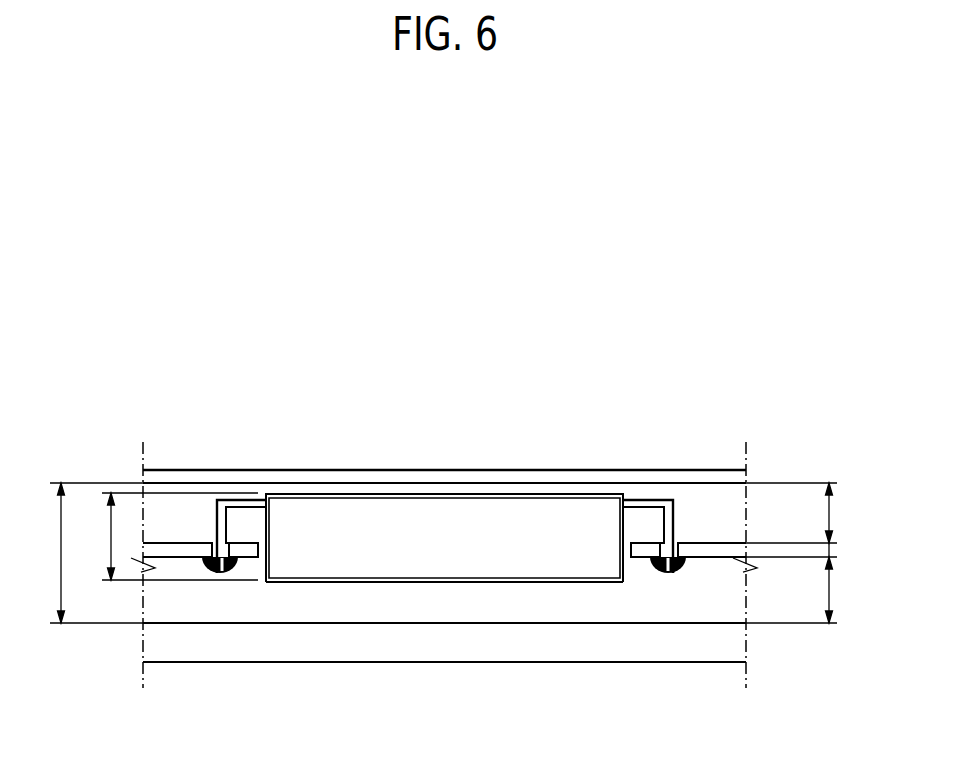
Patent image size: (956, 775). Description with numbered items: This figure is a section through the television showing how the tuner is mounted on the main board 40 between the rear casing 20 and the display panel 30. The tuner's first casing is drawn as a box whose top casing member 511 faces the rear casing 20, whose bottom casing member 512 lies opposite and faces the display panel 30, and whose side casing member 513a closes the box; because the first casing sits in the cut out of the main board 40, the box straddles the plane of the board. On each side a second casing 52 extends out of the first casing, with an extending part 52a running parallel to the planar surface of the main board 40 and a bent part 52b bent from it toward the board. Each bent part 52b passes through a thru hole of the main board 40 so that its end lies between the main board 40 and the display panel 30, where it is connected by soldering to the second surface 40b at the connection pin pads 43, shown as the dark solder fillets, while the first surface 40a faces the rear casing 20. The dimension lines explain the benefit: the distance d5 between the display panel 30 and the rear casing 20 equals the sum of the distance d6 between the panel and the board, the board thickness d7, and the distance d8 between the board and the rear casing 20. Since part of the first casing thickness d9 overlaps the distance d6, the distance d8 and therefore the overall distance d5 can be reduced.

The rear casing 20 is at (282, 473).
The display panel 30 is at (300, 653).
The main board 40 is at (720, 555).
The first surface 40a is at (191, 541).
The second surface 40b is at (194, 559).
The connection pin pads 43 is at (682, 548).
The second casing 52 is at (618, 373).
The extending part 52a is at (648, 501).
The bent part 52b is at (670, 525).
The top casing member 511 is at (360, 494).
The bottom casing member 512 is at (437, 583).
The side casing member 513a is at (447, 507).
The distance between the display panel and the rear casing d5 is at (47, 553).
The distance between the display panel and the main board d6 is at (846, 590).
The thickness of the main board d7 is at (847, 548).
The distance between the main board and the rear casing d8 is at (846, 513).
The thickness of the first casing d9 is at (98, 536).